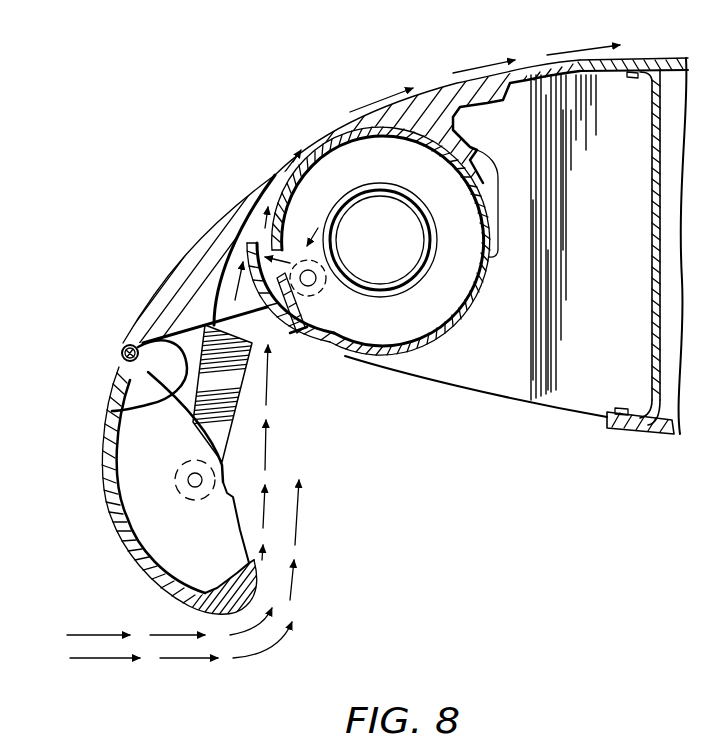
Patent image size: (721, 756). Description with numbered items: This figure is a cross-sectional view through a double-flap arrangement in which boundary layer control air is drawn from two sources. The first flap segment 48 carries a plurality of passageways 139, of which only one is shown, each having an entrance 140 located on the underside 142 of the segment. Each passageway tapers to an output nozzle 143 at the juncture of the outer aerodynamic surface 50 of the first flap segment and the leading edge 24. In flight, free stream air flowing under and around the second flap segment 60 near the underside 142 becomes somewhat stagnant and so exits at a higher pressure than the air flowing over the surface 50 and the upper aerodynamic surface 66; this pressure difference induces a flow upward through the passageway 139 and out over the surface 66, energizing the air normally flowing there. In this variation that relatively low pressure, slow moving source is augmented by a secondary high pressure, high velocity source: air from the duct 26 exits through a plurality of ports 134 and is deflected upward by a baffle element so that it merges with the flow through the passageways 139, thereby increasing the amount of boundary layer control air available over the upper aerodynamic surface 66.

The leading edge 24 is at (315, 145).
The duct 26 is at (418, 181).
The first flap segment 48 is at (172, 290).
The outer aerodynamic surface 50 is at (203, 240).
The second flap segment 60 is at (128, 557).
The upper aerodynamic surface 66 is at (627, 62).
The ports 134 is at (278, 265).
The passageways 139 is at (270, 235).
The entrance 140 is at (217, 308).
The underside 142 is at (125, 405).
The output nozzle 143 is at (270, 183).